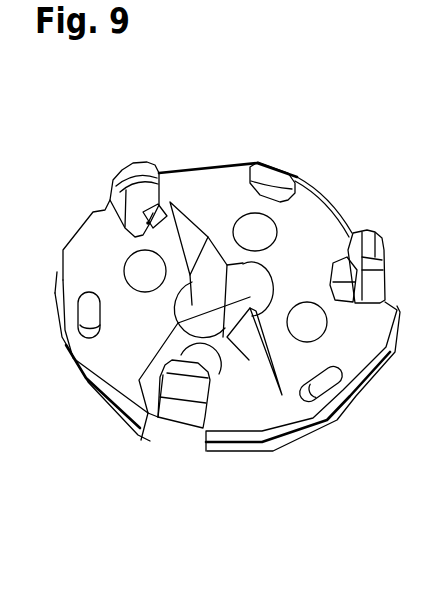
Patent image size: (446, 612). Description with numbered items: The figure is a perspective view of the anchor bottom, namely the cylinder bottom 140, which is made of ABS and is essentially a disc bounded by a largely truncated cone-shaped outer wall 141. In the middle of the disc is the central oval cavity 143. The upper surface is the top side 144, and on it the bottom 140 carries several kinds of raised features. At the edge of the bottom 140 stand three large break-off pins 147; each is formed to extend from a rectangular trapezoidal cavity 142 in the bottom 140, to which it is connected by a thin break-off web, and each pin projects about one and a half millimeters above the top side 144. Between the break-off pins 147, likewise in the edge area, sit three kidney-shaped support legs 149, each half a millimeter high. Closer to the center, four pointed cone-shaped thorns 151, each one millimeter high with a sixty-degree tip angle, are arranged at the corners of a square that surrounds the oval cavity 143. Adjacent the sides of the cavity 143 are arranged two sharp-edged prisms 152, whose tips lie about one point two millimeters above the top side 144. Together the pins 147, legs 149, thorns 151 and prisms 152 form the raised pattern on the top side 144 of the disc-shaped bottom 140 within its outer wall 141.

The cylinder bottom 140 is at (311, 168).
The outer wall 141 is at (225, 452).
The rectangular trapezoidal cavity 142 is at (173, 187).
The central oval cavity 143 is at (148, 413).
The top side 144 is at (286, 407).
The break-off pin 147 is at (132, 173).
The kidney-shaped support leg 149 is at (274, 181).
The cone-shaped thorn 151 is at (143, 278).
The sharp-edged prism 152 is at (193, 234).